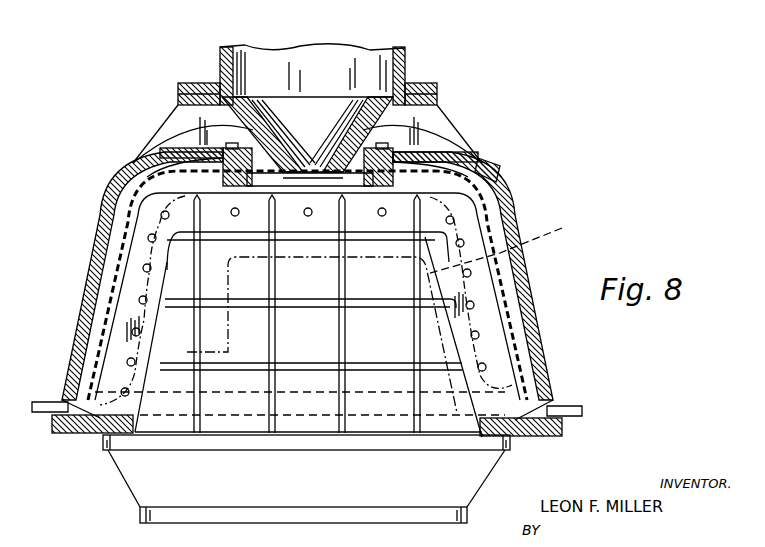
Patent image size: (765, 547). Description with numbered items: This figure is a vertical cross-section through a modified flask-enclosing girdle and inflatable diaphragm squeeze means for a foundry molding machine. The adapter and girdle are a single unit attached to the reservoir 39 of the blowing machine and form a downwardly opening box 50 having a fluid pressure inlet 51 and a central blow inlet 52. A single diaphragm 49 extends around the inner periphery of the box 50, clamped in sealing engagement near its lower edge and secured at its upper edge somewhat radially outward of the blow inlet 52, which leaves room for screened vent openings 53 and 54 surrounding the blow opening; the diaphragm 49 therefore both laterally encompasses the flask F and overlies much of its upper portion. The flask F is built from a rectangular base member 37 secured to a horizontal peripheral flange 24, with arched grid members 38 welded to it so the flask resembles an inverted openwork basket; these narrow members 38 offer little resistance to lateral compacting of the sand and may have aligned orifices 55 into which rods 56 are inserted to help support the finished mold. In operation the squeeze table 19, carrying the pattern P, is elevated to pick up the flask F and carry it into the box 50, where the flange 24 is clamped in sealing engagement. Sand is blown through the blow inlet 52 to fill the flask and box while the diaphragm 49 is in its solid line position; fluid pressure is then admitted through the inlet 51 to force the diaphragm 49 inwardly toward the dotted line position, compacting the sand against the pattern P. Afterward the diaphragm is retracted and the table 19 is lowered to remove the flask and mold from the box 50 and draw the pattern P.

The reservoir 39 is at (405, 56).
The central blow inlet 52 is at (299, 163).
The screened vent opening 53 is at (247, 132).
The screened vent opening 54 is at (395, 135).
The fluid pressure inlet 51 is at (492, 175).
The downwardly opening box 50 is at (513, 207).
The diaphragm 49 is at (157, 223).
The flask F is at (133, 262).
The arched grid members 38 is at (125, 340).
The aligned orifices 55 is at (477, 333).
The rods 56 is at (468, 305).
The pattern P is at (503, 244).
The horizontal peripheral flange 24 is at (55, 426).
The squeeze table 19 is at (103, 440).
The rectangular base member 37 is at (180, 421).